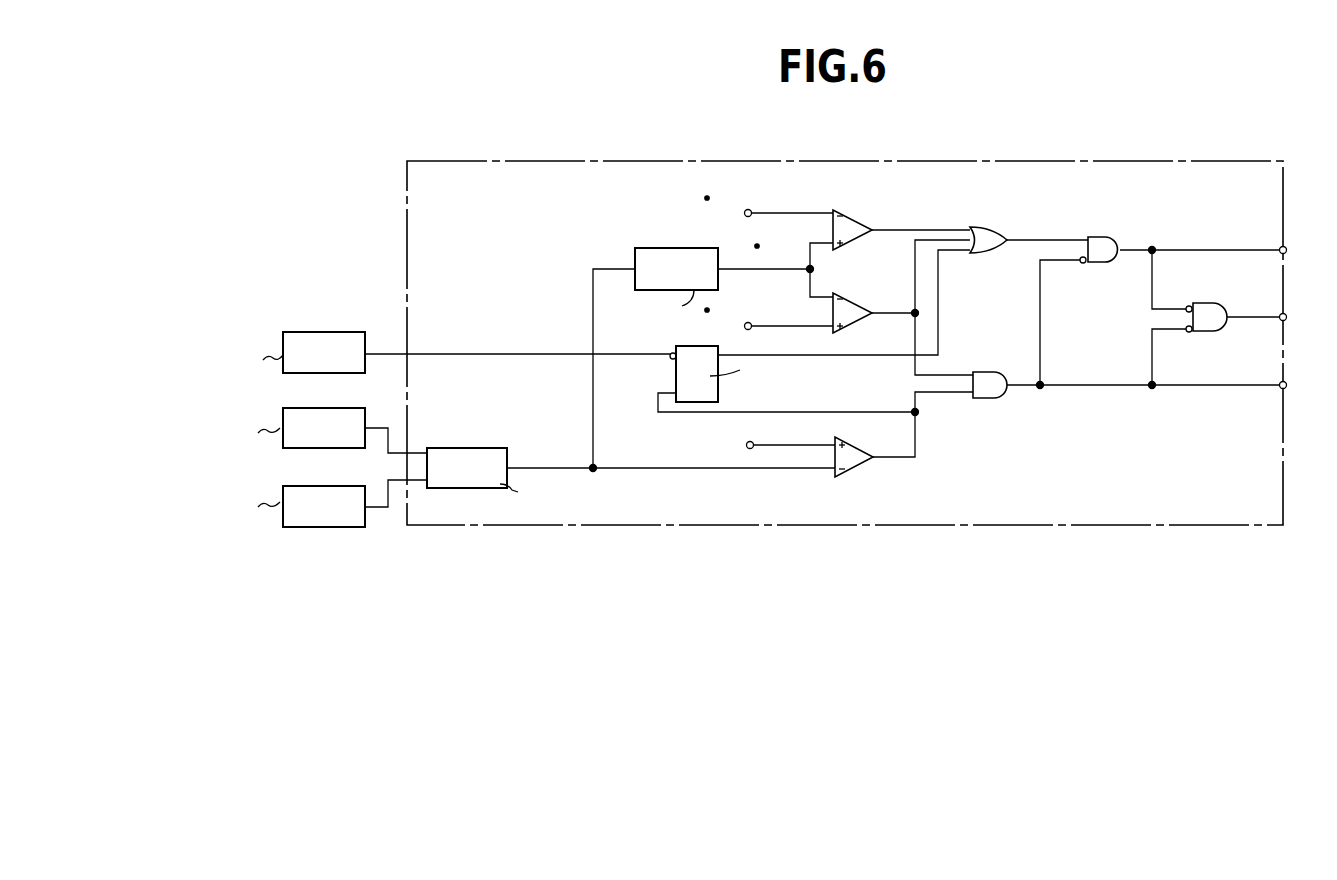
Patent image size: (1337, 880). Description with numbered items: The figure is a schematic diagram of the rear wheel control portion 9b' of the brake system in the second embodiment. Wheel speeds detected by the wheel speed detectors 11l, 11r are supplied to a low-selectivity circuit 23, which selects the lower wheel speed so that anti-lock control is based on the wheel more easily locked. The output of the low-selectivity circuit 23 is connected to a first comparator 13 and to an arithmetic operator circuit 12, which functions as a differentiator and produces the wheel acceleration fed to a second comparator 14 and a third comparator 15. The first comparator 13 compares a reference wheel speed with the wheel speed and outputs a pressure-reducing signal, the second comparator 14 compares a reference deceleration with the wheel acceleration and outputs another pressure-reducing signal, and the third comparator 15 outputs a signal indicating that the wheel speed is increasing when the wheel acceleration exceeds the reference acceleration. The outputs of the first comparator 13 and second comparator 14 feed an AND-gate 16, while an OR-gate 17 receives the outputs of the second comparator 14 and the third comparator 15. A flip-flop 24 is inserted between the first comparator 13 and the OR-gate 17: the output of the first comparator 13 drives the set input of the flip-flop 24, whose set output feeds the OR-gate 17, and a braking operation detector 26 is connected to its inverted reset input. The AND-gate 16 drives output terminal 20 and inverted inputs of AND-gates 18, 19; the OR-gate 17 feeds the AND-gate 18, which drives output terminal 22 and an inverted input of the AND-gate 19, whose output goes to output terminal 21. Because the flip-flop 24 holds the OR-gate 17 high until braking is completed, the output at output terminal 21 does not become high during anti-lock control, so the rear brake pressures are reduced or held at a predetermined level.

The rear wheel control portion 9b' is at (845, 316).
The braking operation detector 26 is at (322, 340).
The wheel speed detector 11r is at (318, 414).
The wheel speed detector 11l is at (318, 492).
The low-selectivity circuit 23 is at (465, 456).
The arithmetic operator circuit 12 is at (652, 256).
The first comparator 13 is at (856, 450).
The second comparator 14 is at (852, 308).
The third comparator 15 is at (851, 224).
The AND-gate 16 is at (987, 374).
The OR-gate 17 is at (982, 233).
The AND-gate 18 is at (1097, 238).
The AND-gate 19 is at (1205, 311).
The flip-flop 24 is at (718, 388).
The output terminal 20 is at (1287, 385).
The output terminal 21 is at (1287, 317).
The output terminal 22 is at (1287, 250).